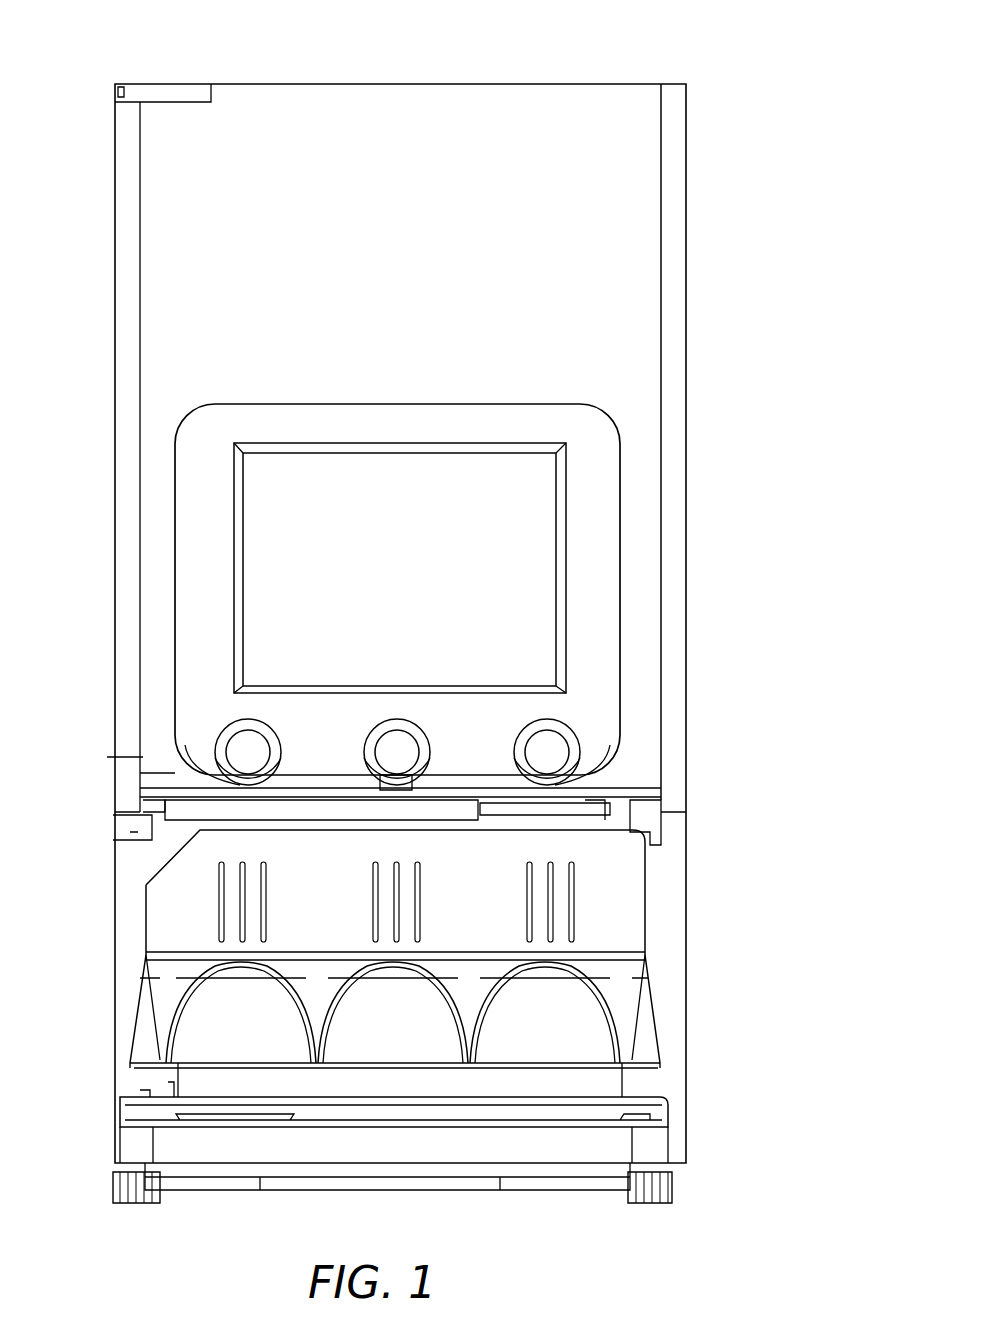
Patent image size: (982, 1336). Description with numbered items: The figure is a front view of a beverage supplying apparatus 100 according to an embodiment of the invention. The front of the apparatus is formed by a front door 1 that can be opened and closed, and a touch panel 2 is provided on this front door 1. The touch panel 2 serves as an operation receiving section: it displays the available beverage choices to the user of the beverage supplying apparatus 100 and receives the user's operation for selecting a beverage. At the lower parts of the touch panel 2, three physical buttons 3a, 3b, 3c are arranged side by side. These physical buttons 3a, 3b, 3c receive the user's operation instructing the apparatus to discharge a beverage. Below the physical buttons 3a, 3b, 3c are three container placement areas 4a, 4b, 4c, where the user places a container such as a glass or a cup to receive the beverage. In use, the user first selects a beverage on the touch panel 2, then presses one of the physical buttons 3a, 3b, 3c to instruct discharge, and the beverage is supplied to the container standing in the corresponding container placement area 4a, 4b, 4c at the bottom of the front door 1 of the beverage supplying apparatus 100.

The beverage supplying apparatus 100 is at (636, 43).
The front door 1 is at (681, 221).
The touch panel 2 is at (535, 561).
The physical button 3a is at (218, 752).
The physical button 3b is at (397, 722).
The physical button 3c is at (577, 752).
The container placement area 4a is at (218, 1015).
The container placement area 4b is at (363, 1053).
The container placement area 4c is at (573, 1003).